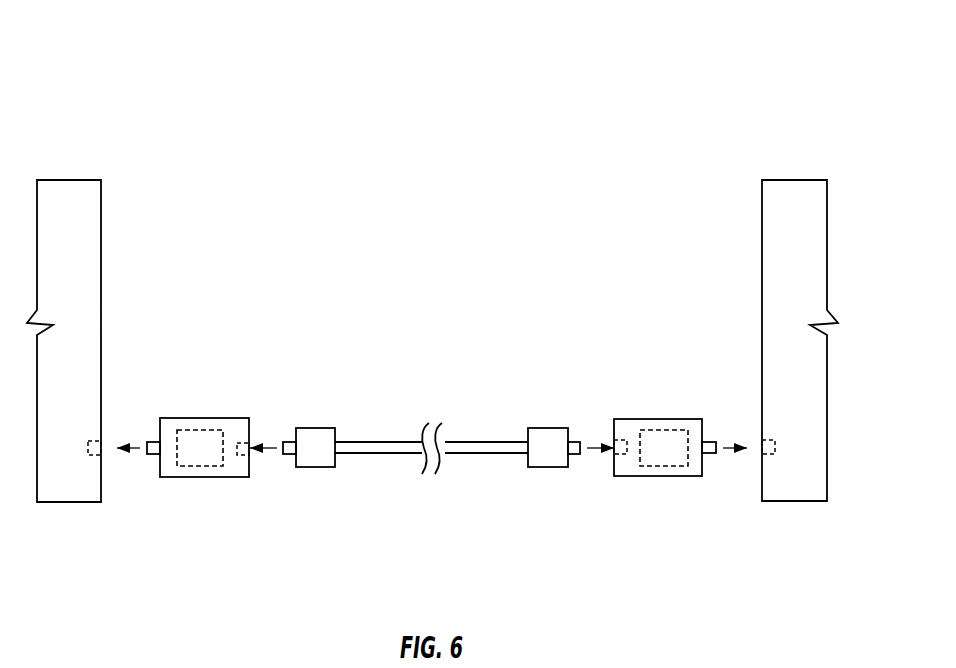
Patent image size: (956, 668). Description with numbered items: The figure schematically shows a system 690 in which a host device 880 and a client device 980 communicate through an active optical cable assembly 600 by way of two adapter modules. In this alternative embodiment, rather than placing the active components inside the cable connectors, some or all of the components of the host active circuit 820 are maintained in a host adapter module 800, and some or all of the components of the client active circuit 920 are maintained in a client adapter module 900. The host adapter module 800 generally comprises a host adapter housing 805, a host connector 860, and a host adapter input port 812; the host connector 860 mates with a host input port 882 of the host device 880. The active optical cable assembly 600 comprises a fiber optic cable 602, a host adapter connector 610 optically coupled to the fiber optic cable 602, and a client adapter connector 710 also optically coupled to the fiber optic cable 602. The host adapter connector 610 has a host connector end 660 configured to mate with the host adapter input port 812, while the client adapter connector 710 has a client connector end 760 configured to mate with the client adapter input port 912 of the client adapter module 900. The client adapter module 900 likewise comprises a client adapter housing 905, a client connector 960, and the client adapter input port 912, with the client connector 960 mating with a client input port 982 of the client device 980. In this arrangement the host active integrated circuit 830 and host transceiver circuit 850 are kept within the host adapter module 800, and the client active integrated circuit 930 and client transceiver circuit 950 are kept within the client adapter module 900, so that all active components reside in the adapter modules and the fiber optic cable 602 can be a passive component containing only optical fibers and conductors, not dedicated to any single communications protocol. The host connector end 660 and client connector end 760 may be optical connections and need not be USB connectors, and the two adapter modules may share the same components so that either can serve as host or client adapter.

The system 690 is at (130, 112).
The active optical cable assembly 600 is at (360, 403).
The fiber optic cable 602 is at (380, 455).
The host adapter connector 610 is at (308, 468).
The host connector end 660 is at (291, 442).
The client adapter connector 710 is at (556, 468).
The client connector end 760 is at (573, 442).
The host adapter module 800 is at (155, 482).
The host adapter housing 805 is at (237, 466).
The host adapter input port 812 is at (243, 443).
The host active circuit 820 is at (135, 494).
The host active integrated circuit 830 is at (135, 494).
The host transceiver circuit 850 is at (208, 478).
The host connector 860 is at (156, 442).
The host device 880 is at (101, 232).
The host input port 882 is at (93, 441).
The client adapter module 900 is at (710, 454).
The client adapter housing 905 is at (690, 425).
The client adapter input port 912 is at (621, 440).
The client active circuit 920 is at (732, 493).
The client active integrated circuit 930 is at (732, 493).
The client transceiver circuit 950 is at (688, 468).
The client connector 960 is at (708, 442).
The client device 980 is at (762, 232).
The client input port 982 is at (770, 440).